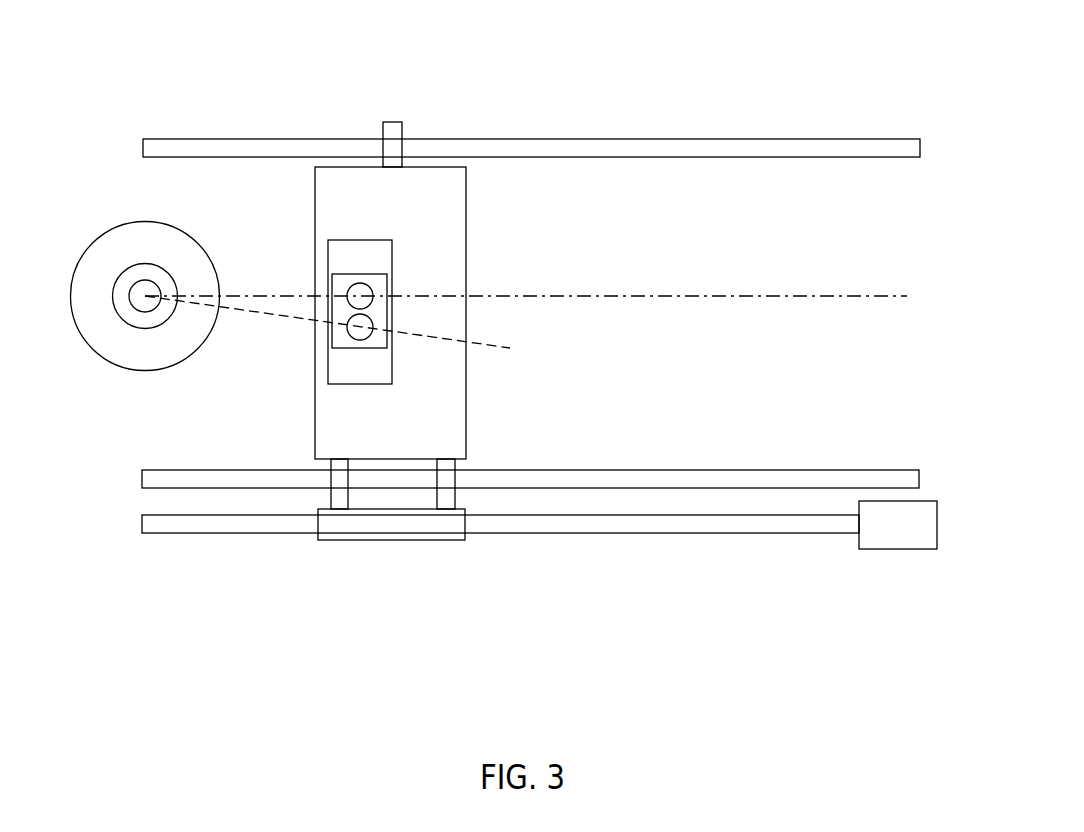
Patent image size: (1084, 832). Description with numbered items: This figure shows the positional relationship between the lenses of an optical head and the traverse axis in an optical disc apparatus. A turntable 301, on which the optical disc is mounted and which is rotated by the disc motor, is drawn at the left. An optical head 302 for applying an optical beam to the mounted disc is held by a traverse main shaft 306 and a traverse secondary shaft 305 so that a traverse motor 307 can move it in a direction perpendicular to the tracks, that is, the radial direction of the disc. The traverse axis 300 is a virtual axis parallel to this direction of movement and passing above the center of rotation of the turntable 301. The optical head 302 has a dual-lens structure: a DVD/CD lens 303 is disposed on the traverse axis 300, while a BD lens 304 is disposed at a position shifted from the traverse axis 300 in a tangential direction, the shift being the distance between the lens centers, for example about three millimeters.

The traverse axis 300 is at (683, 296).
The turntable 301 is at (133, 358).
The optical head 302 is at (450, 279).
The DVD/CD lens 303 is at (360, 290).
The BD lens 304 is at (362, 337).
The traverse secondary shaft 305 is at (538, 151).
The traverse main shaft 306 is at (604, 480).
The traverse motor 307 is at (880, 542).